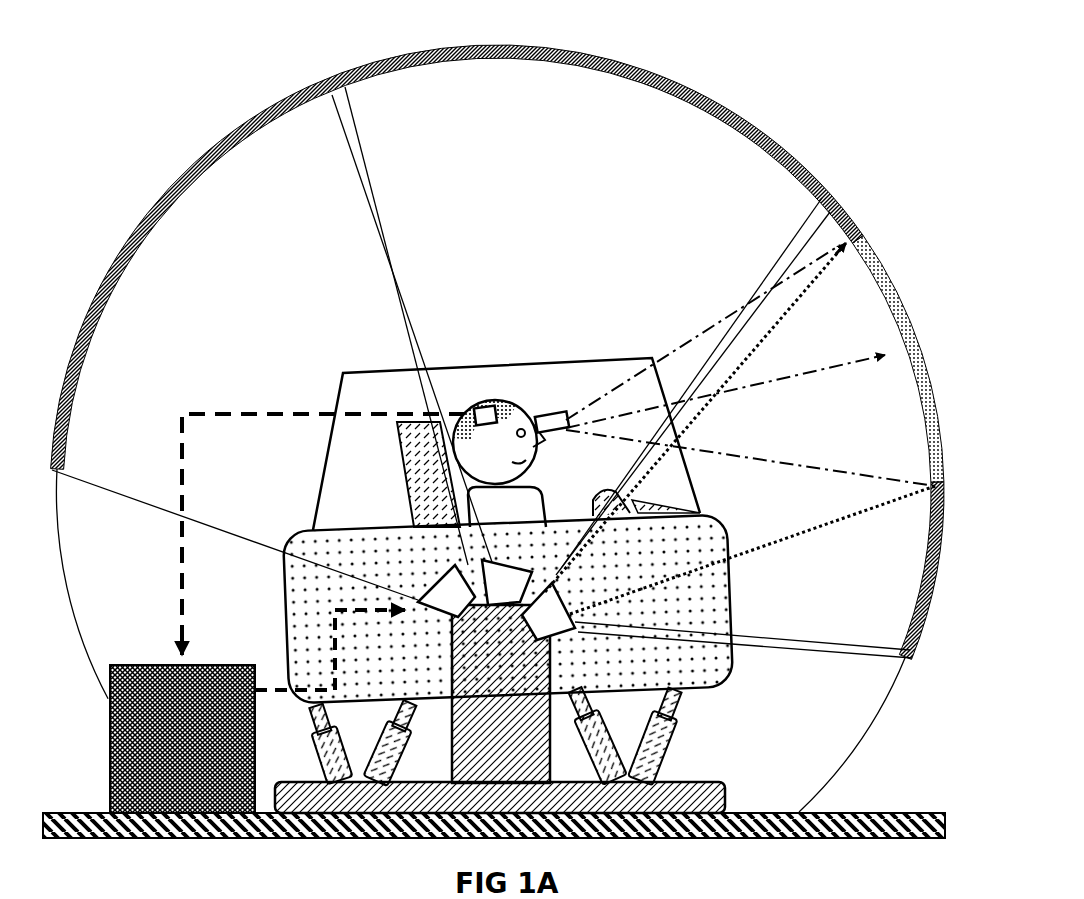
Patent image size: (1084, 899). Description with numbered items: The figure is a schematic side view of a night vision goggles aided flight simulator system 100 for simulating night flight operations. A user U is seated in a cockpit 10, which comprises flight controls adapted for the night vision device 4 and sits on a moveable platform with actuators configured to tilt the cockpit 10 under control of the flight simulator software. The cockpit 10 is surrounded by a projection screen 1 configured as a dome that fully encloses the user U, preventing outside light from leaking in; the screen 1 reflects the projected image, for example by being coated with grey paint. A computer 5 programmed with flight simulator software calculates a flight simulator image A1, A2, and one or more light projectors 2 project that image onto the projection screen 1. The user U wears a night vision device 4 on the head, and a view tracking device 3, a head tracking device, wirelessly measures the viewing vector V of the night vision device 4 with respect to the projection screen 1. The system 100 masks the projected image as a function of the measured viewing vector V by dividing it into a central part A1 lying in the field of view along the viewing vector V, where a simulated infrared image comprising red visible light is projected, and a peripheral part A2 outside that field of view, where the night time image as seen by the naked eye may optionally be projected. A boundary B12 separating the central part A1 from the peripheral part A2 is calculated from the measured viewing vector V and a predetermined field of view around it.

The night vision goggles aided flight simulator system 100 is at (497, 411).
The projection screen 1 is at (898, 313).
The light projector 2 is at (678, 512).
The view tracking device 3 is at (484, 401).
The night vision device 4 is at (548, 404).
The computer 5 is at (182, 739).
The cockpit 10 is at (288, 527).
The user U is at (485, 407).
The viewing vector V is at (750, 365).
The central part of the flight simulator image A1 is at (908, 380).
The peripheral part of the flight simulator image A2 is at (795, 183).
The boundary B12 is at (848, 241).